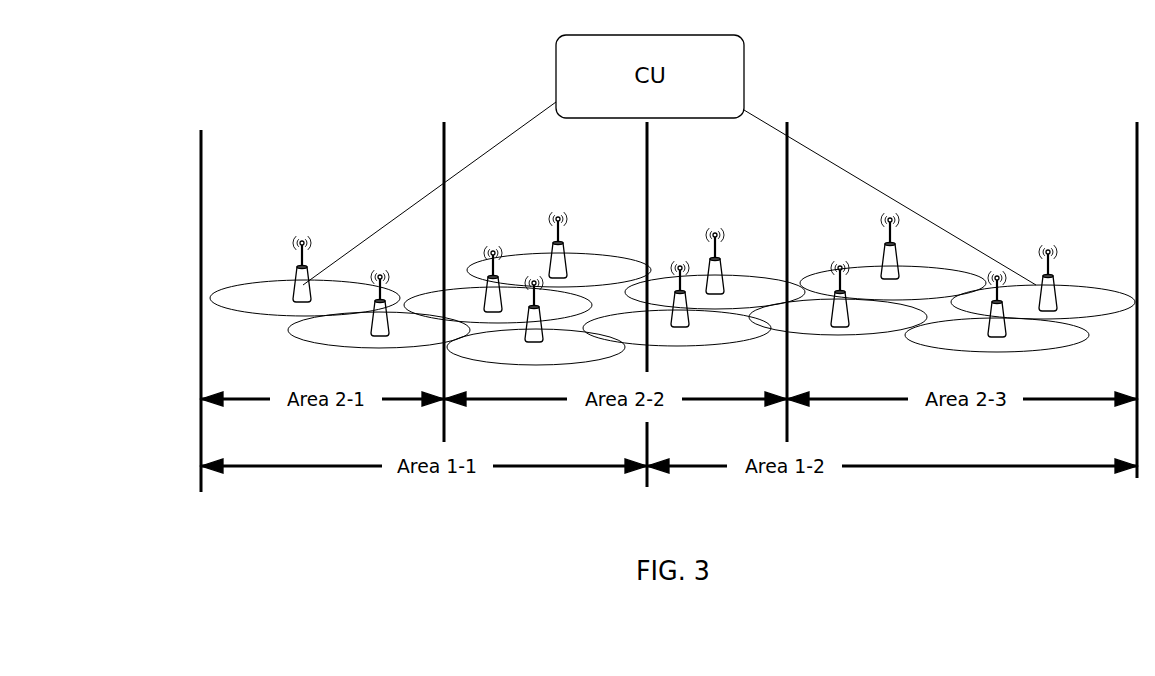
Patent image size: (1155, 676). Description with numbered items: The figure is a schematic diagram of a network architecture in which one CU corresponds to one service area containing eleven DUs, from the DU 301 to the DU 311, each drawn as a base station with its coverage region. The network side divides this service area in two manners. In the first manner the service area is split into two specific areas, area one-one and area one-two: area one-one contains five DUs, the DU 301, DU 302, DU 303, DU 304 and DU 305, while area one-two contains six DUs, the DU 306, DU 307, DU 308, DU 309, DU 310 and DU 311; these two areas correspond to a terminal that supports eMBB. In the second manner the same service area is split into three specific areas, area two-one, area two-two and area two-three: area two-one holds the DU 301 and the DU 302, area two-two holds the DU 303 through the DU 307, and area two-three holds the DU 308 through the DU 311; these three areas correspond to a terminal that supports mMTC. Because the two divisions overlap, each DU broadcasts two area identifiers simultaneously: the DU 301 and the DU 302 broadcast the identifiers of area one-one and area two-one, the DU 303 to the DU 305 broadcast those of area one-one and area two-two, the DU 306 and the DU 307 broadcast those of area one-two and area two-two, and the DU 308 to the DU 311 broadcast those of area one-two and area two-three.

The DU 301 is at (305, 257).
The DU 302 is at (379, 291).
The DU 303 is at (498, 268).
The DU 304 is at (536, 325).
The DU 305 is at (559, 233).
The DU 306 is at (677, 290).
The DU 307 is at (715, 252).
The DU 308 is at (838, 282).
The DU 309 is at (893, 240).
The DU 310 is at (997, 320).
The DU 311 is at (1043, 266).